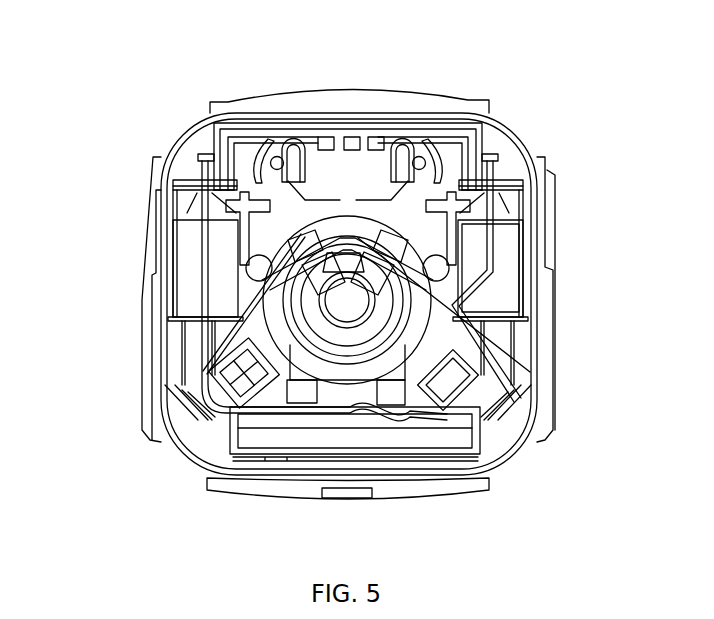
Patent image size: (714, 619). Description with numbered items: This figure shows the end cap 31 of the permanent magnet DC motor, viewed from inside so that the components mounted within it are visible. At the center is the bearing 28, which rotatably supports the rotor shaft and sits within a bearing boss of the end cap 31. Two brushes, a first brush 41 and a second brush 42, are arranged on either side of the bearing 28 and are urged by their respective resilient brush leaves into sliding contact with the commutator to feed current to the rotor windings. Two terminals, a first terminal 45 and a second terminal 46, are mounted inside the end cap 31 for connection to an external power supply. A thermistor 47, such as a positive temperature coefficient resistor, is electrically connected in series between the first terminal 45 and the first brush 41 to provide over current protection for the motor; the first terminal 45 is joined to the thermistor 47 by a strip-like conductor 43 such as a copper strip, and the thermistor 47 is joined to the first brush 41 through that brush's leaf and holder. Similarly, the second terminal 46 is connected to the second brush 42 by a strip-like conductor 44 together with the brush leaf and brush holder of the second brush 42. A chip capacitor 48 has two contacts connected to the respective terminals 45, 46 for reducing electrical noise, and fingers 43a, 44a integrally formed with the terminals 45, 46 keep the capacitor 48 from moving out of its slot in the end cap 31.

The end cap 31 is at (120, 117).
The first terminal 45 is at (265, 152).
The second terminal 46 is at (433, 150).
The finger 43a is at (327, 136).
The chip capacitor 48 is at (352, 136).
The finger 44a is at (375, 136).
The strip-like conductor 44 is at (492, 238).
The second brush 42 is at (488, 300).
The strip-like conductor 43 is at (203, 333).
The first brush 41 is at (320, 268).
The bearing 28 is at (343, 320).
The thermistor 47 is at (377, 437).